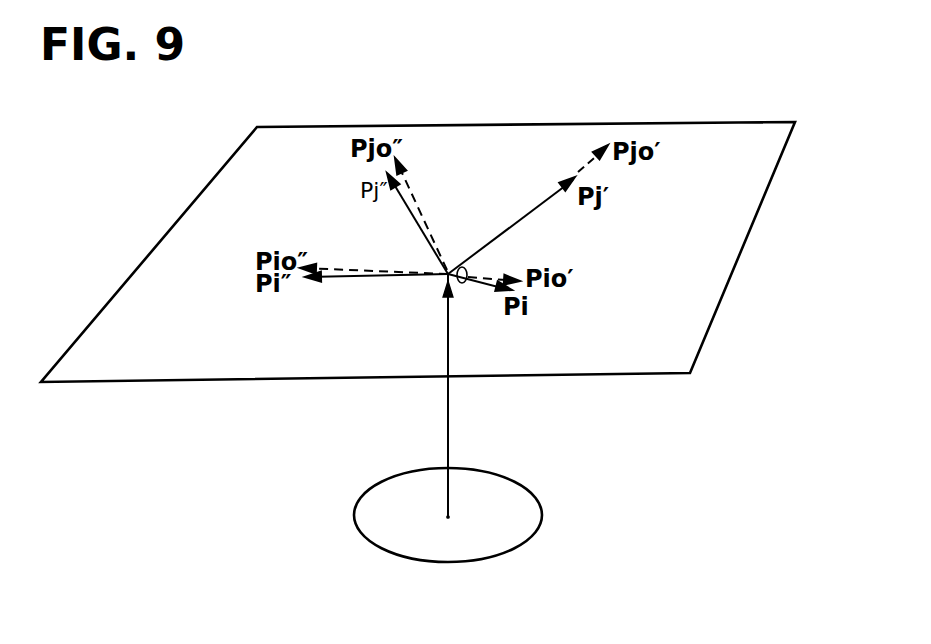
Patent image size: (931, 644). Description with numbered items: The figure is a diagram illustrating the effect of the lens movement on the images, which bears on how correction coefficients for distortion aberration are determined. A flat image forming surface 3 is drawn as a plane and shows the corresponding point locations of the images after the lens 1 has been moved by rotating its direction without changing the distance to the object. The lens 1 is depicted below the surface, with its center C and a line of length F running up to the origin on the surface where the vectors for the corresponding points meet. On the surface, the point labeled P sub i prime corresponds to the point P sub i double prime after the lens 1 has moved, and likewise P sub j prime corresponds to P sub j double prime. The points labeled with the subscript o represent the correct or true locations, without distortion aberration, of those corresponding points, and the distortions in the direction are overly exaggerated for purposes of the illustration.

The lens 1 is at (503, 475).
The flat image forming surface 3 is at (743, 277).
The focal length F is at (461, 395).
The optical center of camera C is at (435, 512).